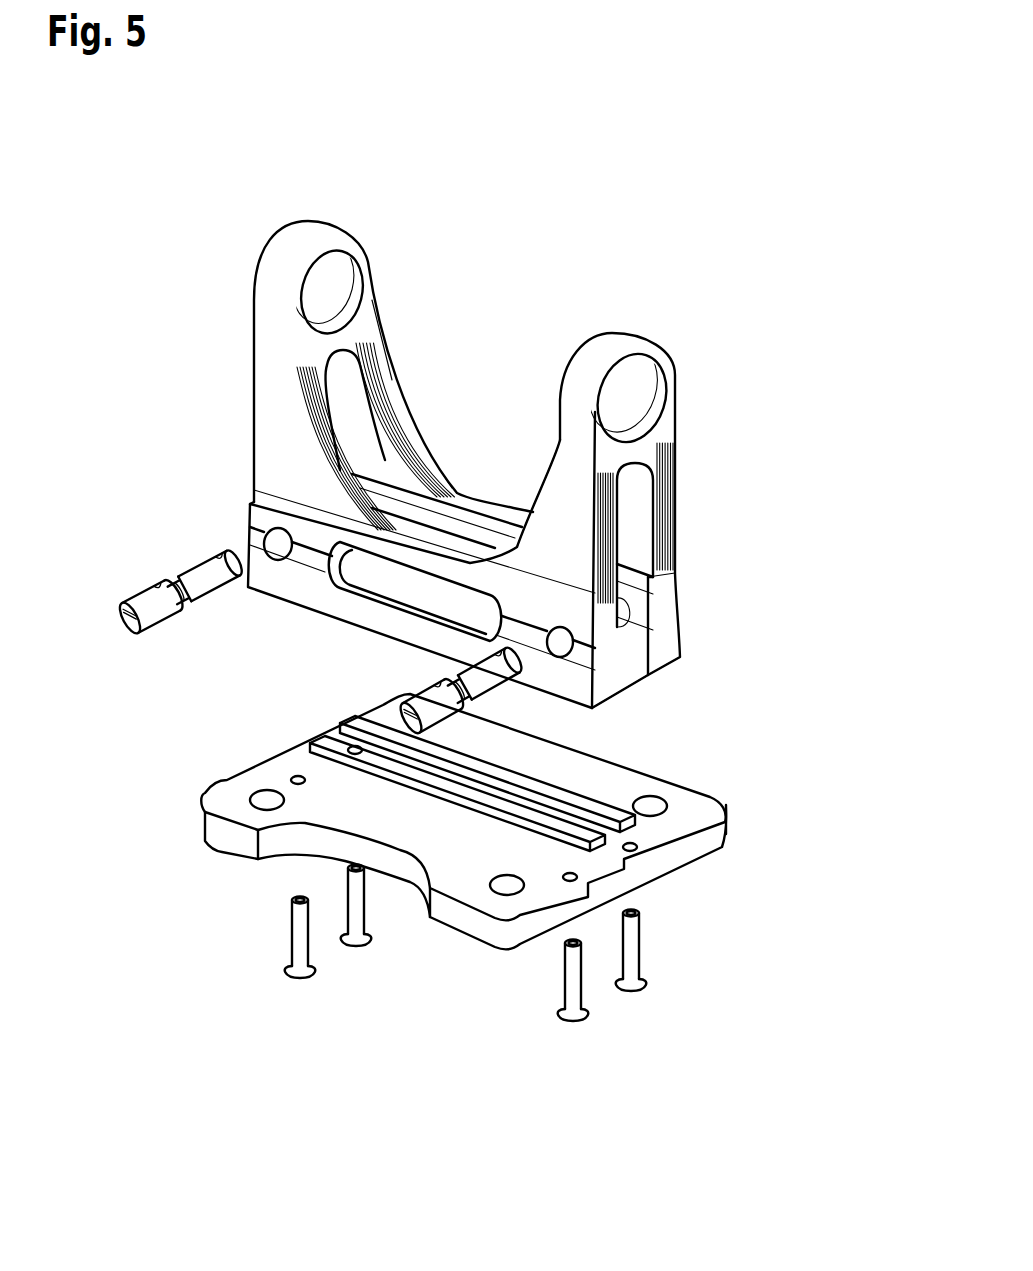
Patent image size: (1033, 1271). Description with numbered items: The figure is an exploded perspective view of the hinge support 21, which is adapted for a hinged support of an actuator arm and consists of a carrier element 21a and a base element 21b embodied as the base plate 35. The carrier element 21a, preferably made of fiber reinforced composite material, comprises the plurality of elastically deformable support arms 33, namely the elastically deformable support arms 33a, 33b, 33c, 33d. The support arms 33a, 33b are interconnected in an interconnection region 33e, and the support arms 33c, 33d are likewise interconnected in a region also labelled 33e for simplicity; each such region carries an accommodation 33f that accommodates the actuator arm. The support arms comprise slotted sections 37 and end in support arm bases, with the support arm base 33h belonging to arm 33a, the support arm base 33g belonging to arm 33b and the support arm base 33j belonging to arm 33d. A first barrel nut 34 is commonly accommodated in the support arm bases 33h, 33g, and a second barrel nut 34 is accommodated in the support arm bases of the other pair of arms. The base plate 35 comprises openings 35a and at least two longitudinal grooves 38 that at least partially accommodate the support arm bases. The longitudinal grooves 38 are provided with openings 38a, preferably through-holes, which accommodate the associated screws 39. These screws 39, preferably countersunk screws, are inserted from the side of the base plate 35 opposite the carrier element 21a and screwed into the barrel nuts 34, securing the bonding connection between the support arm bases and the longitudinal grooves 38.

The hinge support 21 is at (752, 246).
The carrier element 21a is at (228, 224).
The base element 21b is at (736, 830).
The plurality of elastically deformable support arms 33 is at (240, 380).
The elastically deformable support arm 33a is at (530, 495).
The elastically deformable support arm 33b is at (678, 482).
The elastically deformable support arm 33c is at (447, 450).
The elastically deformable support arm 33d is at (240, 312).
The interconnection region 33e is at (398, 352).
The accommodation 33f is at (342, 283).
The support arm base 33g is at (682, 604).
The support arm base 33h is at (627, 690).
The support arm base 33j is at (238, 545).
The barrel nut 34 is at (128, 614).
The base plate 35 is at (694, 805).
The openings 35a is at (265, 800).
The slotted sections 37 is at (420, 417).
The longitudinal grooves 38 is at (274, 760).
The openings 38a is at (298, 776).
The screws 39 is at (302, 978).